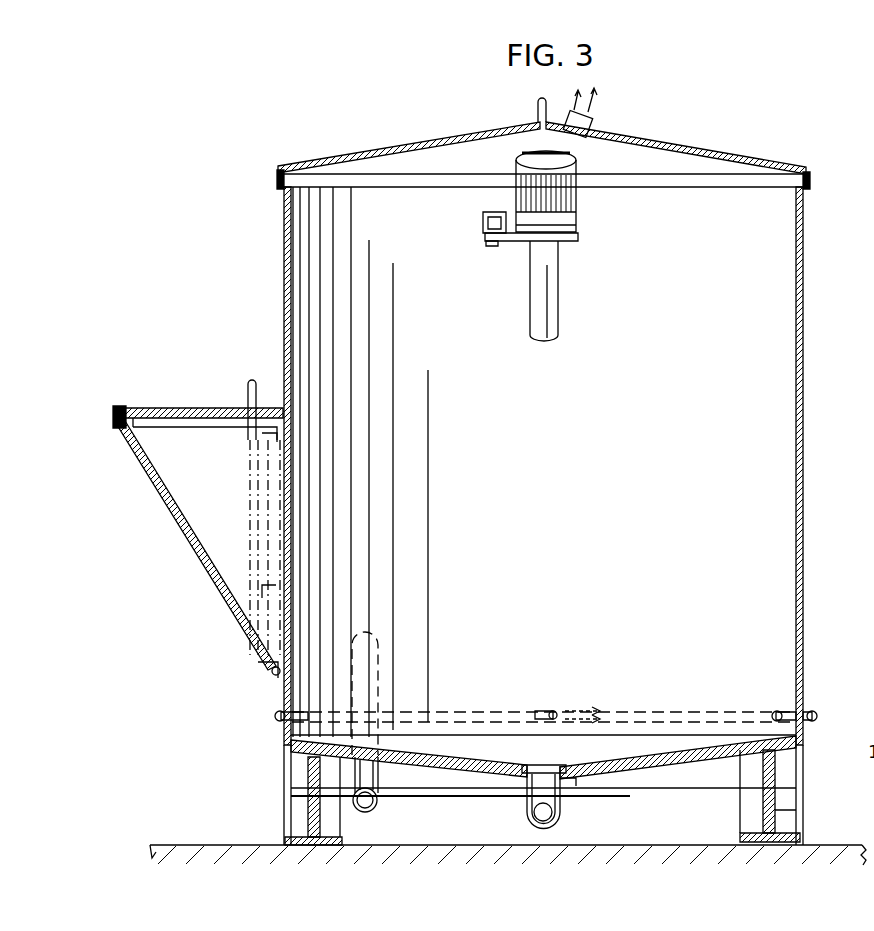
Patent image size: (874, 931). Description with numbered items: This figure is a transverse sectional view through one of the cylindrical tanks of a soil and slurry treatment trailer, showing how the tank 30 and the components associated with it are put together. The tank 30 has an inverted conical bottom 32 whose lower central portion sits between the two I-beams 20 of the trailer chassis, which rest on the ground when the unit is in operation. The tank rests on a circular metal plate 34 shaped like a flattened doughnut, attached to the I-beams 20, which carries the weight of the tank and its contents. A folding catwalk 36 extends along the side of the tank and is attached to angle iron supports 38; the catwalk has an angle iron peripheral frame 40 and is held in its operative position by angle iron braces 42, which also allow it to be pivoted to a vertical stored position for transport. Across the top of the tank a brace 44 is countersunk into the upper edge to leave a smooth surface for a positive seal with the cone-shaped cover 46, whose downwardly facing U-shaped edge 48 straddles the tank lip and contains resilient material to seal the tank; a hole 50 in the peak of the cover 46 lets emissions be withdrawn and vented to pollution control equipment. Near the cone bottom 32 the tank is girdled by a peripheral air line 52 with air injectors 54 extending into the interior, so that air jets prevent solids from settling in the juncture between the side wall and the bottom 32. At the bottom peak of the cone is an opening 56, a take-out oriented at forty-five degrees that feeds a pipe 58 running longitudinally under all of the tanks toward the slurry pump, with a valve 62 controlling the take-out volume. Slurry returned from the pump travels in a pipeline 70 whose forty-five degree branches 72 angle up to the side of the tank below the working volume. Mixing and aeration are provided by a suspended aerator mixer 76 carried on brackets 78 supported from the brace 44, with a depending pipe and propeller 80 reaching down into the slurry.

The I-beams 20 is at (801, 806).
The cylindrical tank 30 is at (803, 530).
The inverted conical bottom 32 is at (602, 755).
The circular metal plate 34 is at (690, 756).
The folding catwalk 36 is at (178, 408).
The angle iron supports 38 is at (272, 676).
The angle iron peripheral frame 40 is at (118, 428).
The angle iron braces 42 is at (172, 500).
The brace 44 is at (483, 222).
The cover 46 is at (705, 152).
The U-shaped edge 48 is at (810, 182).
The hole 50 is at (586, 118).
The peripheral air line 52 is at (814, 712).
The air injectors 54 is at (778, 712).
The opening 56 is at (528, 790).
The pipe 58 is at (556, 818).
The valve 62 is at (538, 765).
The pipeline 70 is at (372, 814).
The branches 72 is at (378, 685).
The aerator mixer 76 is at (577, 200).
The brackets 78 is at (578, 236).
The depending pipe and propeller 80 is at (548, 320).